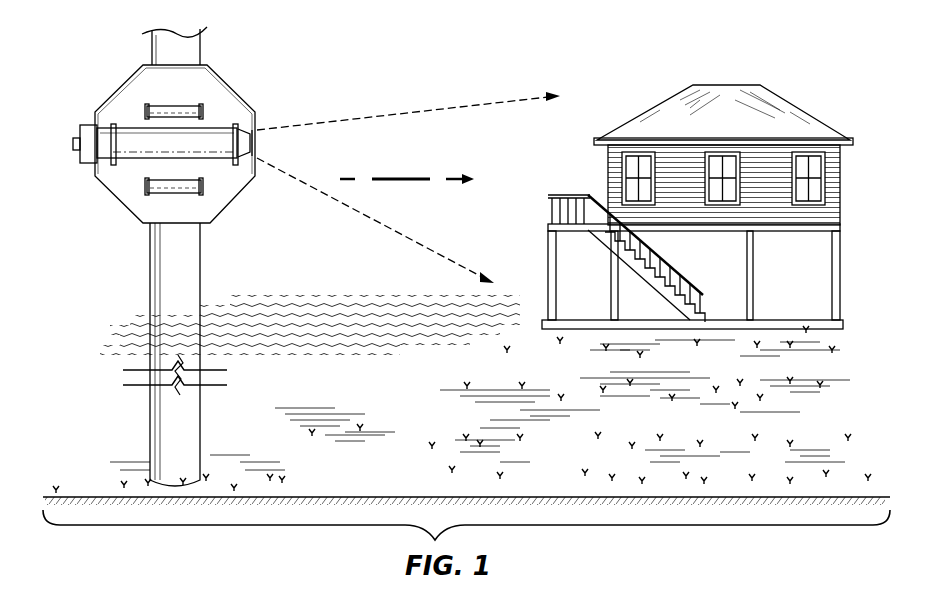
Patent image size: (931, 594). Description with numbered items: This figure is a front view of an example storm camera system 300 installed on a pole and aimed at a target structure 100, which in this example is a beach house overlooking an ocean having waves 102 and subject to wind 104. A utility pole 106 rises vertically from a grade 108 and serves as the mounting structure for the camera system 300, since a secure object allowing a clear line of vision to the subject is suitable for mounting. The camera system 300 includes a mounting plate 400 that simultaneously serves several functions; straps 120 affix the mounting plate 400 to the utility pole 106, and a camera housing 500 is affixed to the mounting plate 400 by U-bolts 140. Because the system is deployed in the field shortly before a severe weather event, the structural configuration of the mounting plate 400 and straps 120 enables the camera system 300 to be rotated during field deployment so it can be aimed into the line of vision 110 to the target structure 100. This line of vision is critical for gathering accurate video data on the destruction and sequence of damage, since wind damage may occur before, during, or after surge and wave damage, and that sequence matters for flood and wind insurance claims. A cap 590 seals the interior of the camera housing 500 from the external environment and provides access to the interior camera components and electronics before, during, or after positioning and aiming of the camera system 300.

The target structure 100 is at (788, 115).
The waves 102 is at (318, 310).
The wind 104 is at (403, 178).
The utility pole 106 is at (150, 52).
The grade 108 is at (422, 497).
The line of vision 110 is at (302, 183).
The straps 120 is at (147, 106).
The U-bolts 140 is at (113, 150).
The storm camera system 300 is at (247, 45).
The mounting plate 400 is at (142, 213).
The camera housing 500 is at (210, 135).
The cap 590 is at (73, 145).